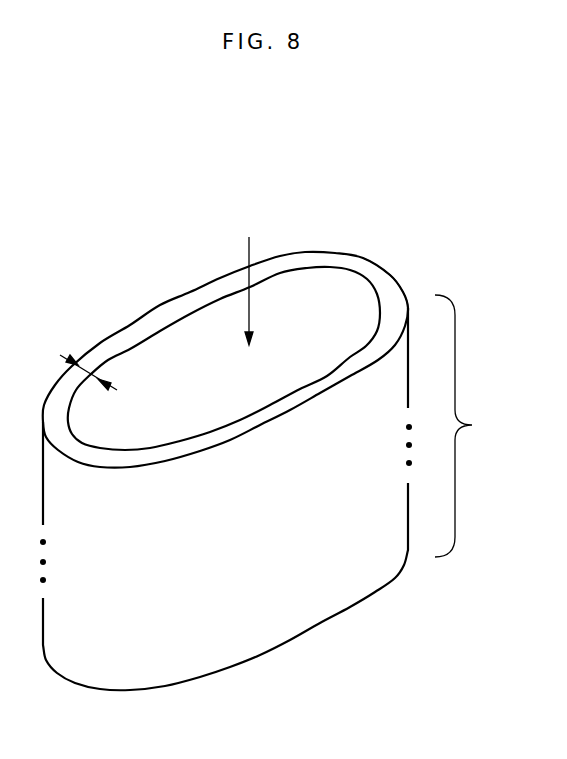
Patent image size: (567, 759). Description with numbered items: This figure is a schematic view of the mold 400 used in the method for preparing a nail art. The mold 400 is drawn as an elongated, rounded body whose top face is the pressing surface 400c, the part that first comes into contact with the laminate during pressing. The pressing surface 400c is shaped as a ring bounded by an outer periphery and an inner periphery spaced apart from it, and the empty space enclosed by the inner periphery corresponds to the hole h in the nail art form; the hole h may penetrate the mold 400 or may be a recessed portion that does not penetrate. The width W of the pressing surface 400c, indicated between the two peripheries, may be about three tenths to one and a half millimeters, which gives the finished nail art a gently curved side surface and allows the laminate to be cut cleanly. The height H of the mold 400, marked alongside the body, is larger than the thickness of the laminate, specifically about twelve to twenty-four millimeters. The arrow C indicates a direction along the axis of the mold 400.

The mold 400 is at (73, 126).
The pressing surface 400c is at (351, 271).
The central axis direction C is at (250, 278).
The width of the pressing surface W is at (88, 373).
The hole h is at (177, 367).
The height of the mold H is at (464, 426).